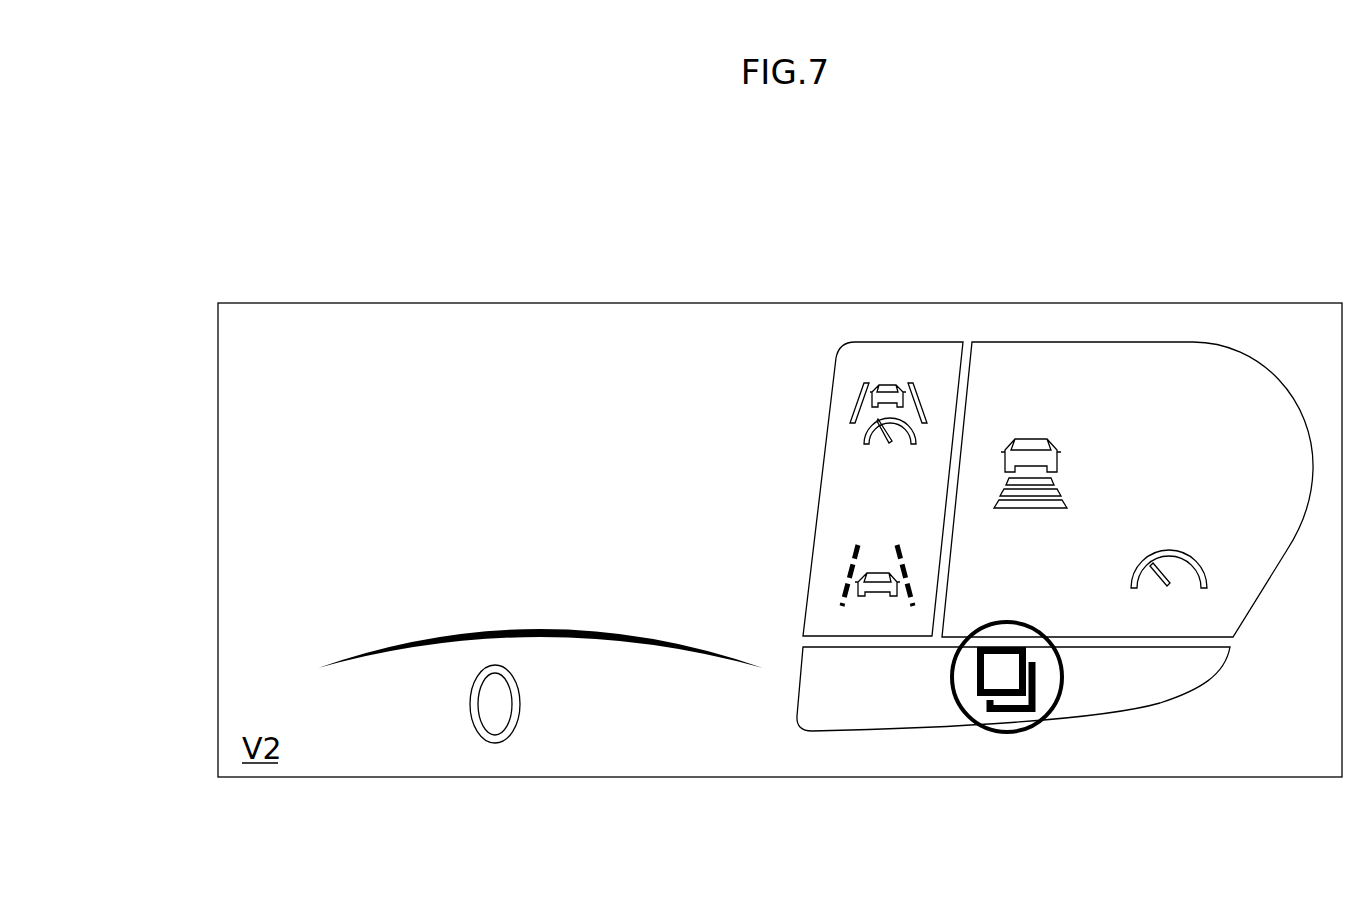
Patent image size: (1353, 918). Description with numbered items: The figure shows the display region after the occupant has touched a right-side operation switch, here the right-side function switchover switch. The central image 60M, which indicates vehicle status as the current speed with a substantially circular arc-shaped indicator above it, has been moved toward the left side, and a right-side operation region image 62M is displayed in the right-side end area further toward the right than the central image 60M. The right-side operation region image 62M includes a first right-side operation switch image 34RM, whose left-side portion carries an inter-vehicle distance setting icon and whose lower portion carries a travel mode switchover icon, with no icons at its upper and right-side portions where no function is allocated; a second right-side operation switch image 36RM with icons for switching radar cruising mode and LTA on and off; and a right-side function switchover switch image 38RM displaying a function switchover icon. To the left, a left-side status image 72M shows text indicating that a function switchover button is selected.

The left-side status image 72M is at (283, 387).
The central image 60M is at (462, 723).
The right-side operation region image 62M is at (1107, 331).
The second right-side operation switch image 36RM is at (942, 341).
The first right-side operation switch image 34RM is at (1192, 341).
The right-side function switchover switch image 38RM is at (1188, 690).